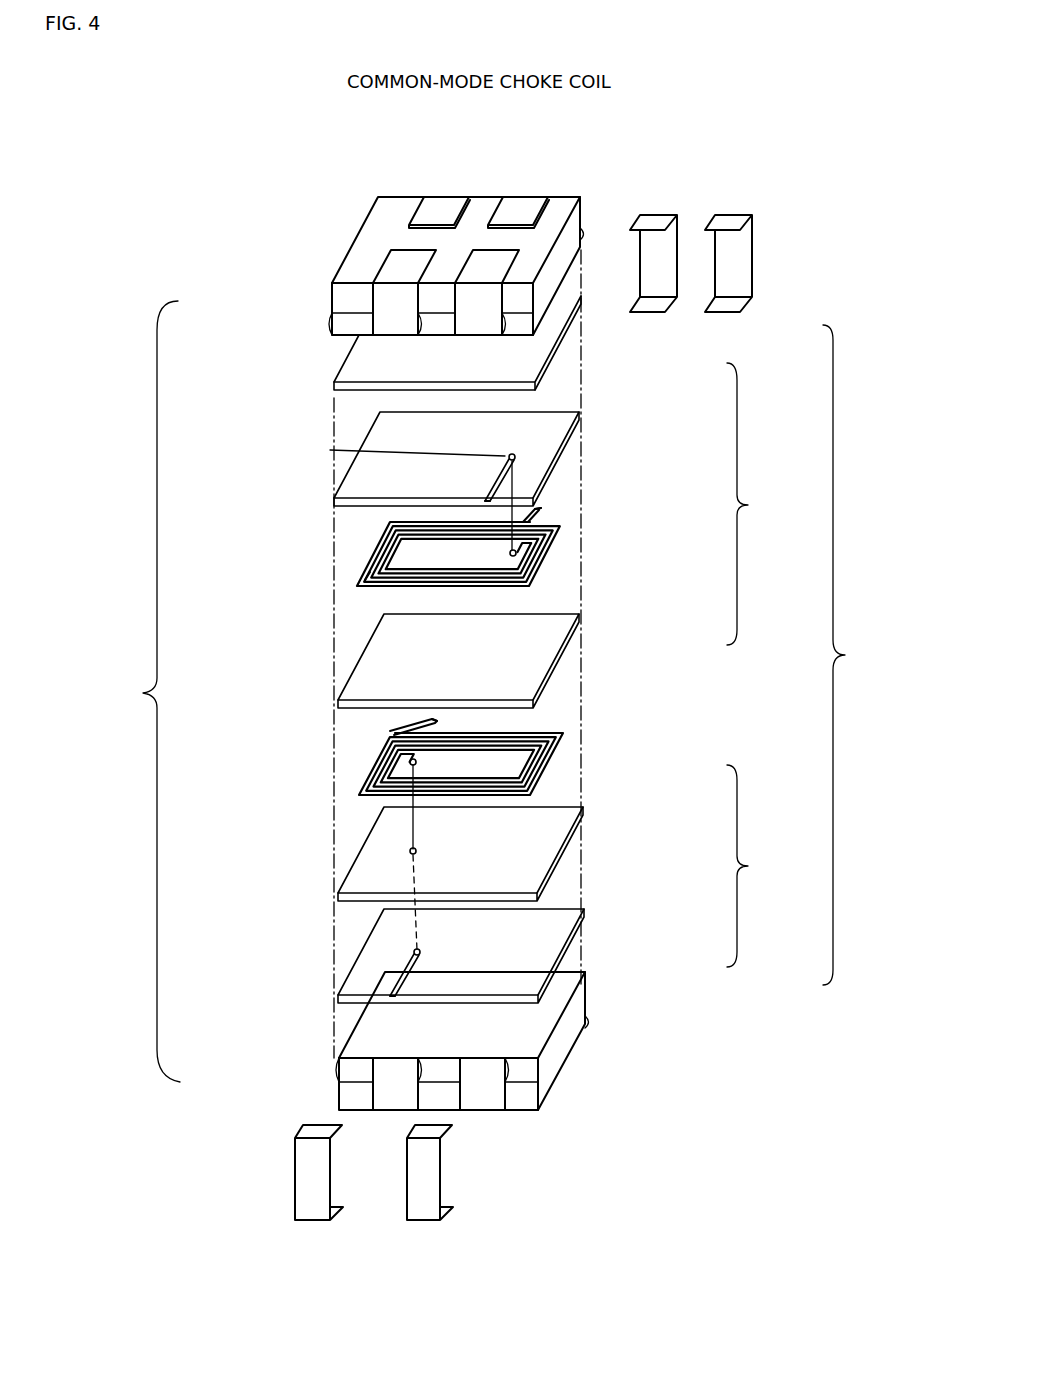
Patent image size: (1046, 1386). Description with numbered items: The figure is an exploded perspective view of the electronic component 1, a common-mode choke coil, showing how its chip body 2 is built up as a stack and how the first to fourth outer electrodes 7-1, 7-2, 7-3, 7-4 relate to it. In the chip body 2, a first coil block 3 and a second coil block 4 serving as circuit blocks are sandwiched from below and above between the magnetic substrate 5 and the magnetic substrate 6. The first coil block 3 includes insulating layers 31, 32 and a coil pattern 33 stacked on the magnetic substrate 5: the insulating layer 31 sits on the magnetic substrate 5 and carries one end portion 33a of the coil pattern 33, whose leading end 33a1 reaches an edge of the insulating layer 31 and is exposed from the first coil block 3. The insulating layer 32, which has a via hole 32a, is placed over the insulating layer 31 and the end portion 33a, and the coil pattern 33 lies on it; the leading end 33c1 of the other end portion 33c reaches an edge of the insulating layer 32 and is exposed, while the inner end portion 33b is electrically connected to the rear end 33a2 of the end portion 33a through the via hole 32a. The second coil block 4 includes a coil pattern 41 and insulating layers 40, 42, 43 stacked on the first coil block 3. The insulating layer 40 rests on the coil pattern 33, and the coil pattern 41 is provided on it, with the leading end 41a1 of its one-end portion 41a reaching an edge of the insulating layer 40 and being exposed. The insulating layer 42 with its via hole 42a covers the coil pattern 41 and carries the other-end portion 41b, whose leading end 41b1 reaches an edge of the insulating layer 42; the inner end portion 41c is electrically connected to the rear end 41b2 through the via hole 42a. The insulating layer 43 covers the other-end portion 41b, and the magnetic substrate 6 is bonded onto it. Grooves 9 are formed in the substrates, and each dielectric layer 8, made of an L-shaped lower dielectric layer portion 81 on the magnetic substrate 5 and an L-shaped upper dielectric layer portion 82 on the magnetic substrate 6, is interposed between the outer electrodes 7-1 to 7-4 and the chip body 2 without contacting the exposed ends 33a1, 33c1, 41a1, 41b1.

The electronic component 1 is at (401, 183).
The chip body 2 is at (736, 617).
The first coil block 3 is at (762, 866).
The second coil block 4 is at (762, 504).
The magnetic substrate 5 is at (586, 1032).
The magnetic substrate 6 is at (562, 268).
The first outer electrode 7-1 is at (297, 1222).
The second outer electrode 7-2 is at (658, 213).
The third outer electrode 7-3 is at (420, 1222).
The fourth outer electrode 7-4 is at (747, 213).
The dielectric layer 8 is at (115, 691).
The groove 9 is at (585, 232).
The insulating layer 31 is at (568, 951).
The insulating layer 32 is at (565, 851).
The via hole 32a is at (408, 851).
The coil pattern 33 is at (565, 768).
The end portion 33a is at (403, 975).
The leading end 33a1 is at (390, 997).
The rear end 33a2 is at (412, 951).
The inner end portion 33b is at (408, 762).
The other end portion 33c is at (405, 727).
The leading end 33c1 is at (430, 721).
The insulating layer 40 is at (560, 672).
The coil pattern 41 is at (535, 563).
The one-end portion 41a is at (553, 534).
The leading end 41a1 is at (543, 509).
The other-end portion 41b is at (493, 481).
The leading end 41b1 is at (487, 503).
The rear end 41b2 is at (508, 455).
The inner end portion 41c is at (460, 551).
The insulating layer 42 is at (575, 453).
The via hole 42a is at (330, 450).
The insulating layer 43 is at (536, 371).
The lower dielectric layer portion 81 is at (385, 1085).
The upper dielectric layer portion 82 is at (385, 303).